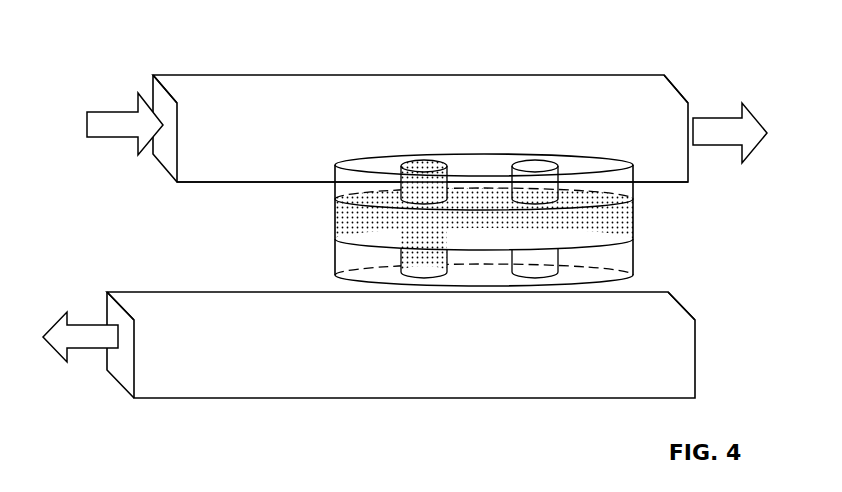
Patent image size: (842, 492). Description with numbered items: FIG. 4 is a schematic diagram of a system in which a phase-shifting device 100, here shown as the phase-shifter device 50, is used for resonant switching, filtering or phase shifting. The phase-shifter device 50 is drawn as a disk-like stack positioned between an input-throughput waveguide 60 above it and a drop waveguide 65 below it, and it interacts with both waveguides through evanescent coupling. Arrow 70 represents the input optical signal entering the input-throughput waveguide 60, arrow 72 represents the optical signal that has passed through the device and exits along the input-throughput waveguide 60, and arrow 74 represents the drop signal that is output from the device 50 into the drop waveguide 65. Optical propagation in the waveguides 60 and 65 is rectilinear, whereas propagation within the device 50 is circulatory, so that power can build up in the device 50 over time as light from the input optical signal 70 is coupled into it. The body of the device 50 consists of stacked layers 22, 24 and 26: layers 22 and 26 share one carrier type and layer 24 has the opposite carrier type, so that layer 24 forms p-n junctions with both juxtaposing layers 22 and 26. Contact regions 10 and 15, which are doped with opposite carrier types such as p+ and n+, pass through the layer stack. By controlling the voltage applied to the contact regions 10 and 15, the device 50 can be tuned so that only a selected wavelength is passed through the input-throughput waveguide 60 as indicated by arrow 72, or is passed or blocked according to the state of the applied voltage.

The phase-shifting device 100 is at (92, 23).
The input-throughput waveguide 60 is at (205, 87).
The drop waveguide 65 is at (243, 388).
The input optical signal 70 is at (125, 124).
The optical signal that has passed through the device 72 is at (730, 133).
The drop signal 74 is at (80, 337).
The phase-shifter device 50 is at (519, 153).
The layer 22 is at (484, 193).
The layer 24 is at (484, 213).
The layer 26 is at (484, 257).
The contact region 10 is at (424, 165).
The contact region 15 is at (535, 165).